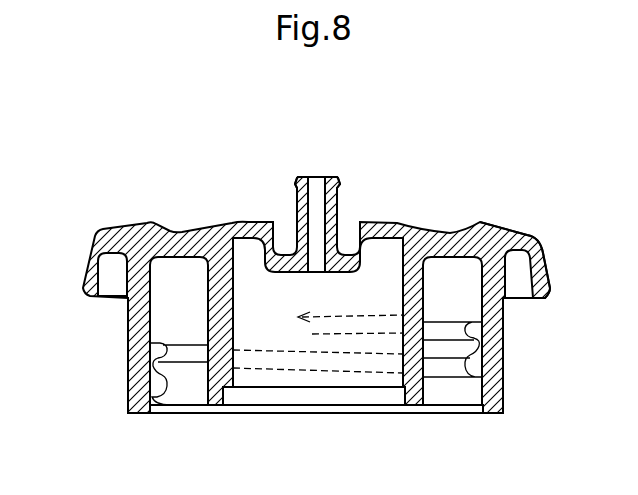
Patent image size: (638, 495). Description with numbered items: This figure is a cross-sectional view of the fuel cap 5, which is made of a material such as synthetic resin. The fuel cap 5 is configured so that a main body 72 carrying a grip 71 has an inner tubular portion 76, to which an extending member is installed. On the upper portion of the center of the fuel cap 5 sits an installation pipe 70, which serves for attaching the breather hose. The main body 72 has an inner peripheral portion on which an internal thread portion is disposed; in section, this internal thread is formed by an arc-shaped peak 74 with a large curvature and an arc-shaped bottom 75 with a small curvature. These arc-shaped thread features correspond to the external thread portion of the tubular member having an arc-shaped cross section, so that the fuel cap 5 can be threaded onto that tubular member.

The fuel cap 5 is at (203, 166).
The installation pipe 70 is at (299, 205).
The grip 71 is at (503, 247).
The main body 72 is at (138, 350).
The arc-shaped peak 74 is at (172, 392).
The arc-shaped bottom 75 is at (472, 354).
The inner tubular portion 76 is at (228, 311).